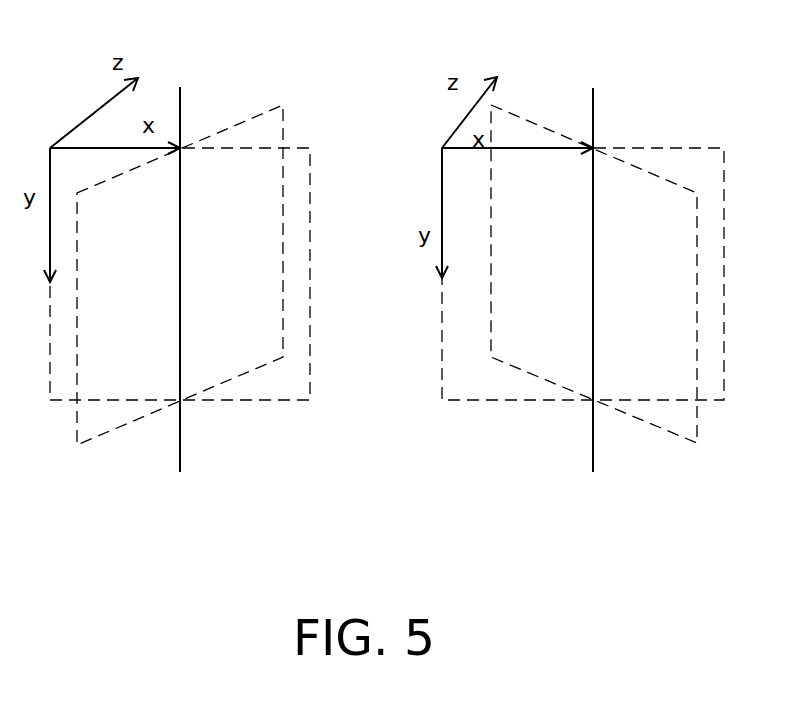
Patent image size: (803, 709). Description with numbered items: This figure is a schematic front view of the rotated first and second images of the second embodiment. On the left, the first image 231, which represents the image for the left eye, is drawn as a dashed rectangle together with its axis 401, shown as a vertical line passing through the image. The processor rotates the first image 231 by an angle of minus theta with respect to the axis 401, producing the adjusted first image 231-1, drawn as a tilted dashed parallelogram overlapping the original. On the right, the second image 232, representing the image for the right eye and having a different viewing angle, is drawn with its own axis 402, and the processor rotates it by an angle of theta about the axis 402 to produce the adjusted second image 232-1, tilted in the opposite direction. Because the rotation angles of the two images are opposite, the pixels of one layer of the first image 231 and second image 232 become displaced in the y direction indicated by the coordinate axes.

The first image 231 is at (278, 400).
The adjusted first image 231-1 is at (240, 120).
The second image 232 is at (493, 400).
The adjusted second image 232-1 is at (532, 122).
The axis 401 is at (180, 435).
The axis 402 is at (593, 435).